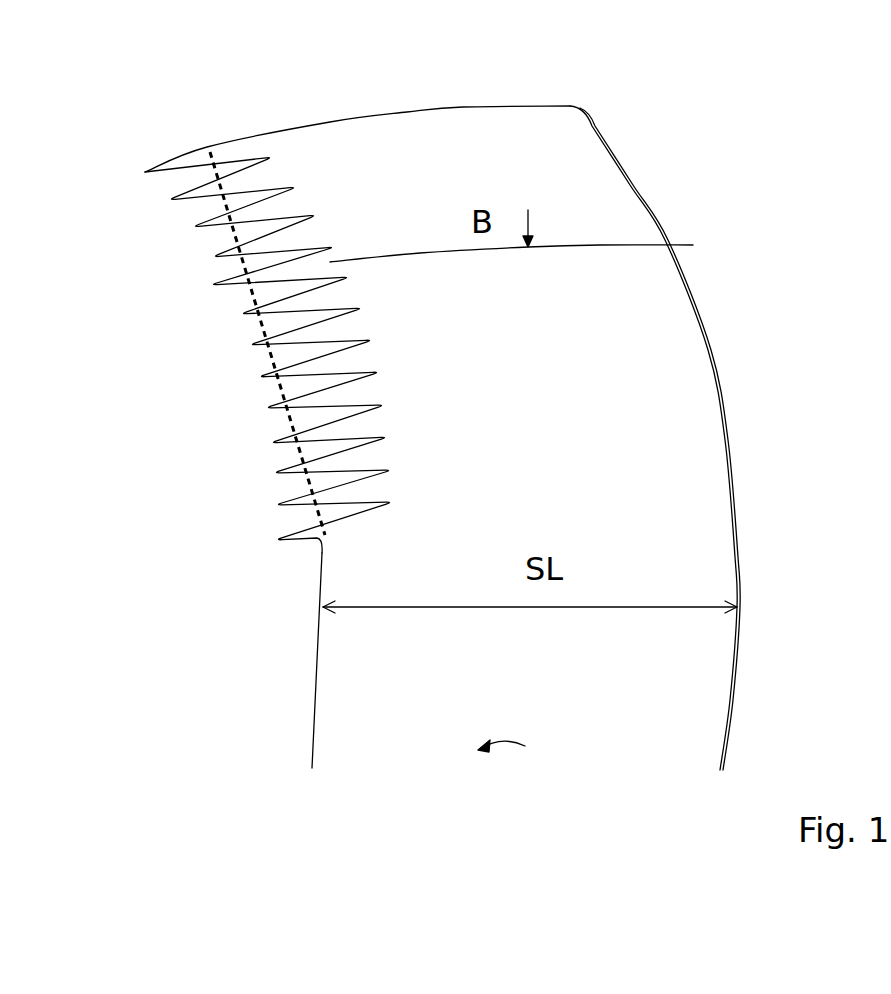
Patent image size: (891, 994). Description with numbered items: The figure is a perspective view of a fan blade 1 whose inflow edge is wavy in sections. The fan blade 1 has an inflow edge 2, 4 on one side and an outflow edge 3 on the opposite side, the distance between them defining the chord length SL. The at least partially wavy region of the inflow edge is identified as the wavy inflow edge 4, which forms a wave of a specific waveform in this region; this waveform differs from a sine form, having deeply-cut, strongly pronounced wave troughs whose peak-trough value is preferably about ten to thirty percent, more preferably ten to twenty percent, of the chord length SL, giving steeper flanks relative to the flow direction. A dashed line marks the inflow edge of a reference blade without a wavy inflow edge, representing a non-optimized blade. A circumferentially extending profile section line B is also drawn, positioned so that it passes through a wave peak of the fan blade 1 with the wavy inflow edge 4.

The fan blade 1 is at (363, 150).
The inflow edge 2 is at (322, 618).
The outflow edge 3 is at (712, 350).
The wavy inflow edge 4 is at (300, 329).